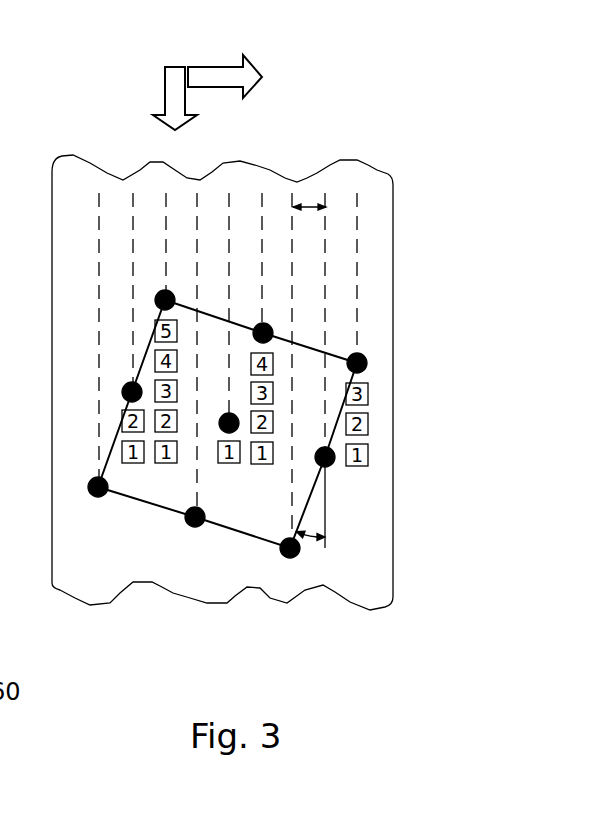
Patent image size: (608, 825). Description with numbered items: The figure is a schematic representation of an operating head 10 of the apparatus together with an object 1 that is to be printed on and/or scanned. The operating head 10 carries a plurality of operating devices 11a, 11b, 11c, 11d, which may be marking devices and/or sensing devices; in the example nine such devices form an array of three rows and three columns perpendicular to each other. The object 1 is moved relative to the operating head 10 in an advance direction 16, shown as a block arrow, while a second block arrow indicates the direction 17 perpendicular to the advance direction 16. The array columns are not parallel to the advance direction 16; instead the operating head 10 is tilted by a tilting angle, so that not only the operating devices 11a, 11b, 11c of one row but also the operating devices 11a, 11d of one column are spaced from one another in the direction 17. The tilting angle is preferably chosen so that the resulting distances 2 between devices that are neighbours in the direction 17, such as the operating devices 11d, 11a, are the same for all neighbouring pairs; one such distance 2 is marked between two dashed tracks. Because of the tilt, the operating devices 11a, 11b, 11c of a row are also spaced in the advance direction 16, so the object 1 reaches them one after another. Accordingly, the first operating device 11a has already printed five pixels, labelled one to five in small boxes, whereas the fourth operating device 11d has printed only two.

The object 1 is at (367, 577).
The distance 2 is at (308, 200).
The operating head 10 is at (382, 380).
The first operating device 11a is at (157, 294).
The operating device 11b is at (264, 324).
The operating device 11c is at (365, 355).
The fourth operating device 11d is at (124, 388).
The advance direction 16 is at (177, 92).
The direction perpendicular to the advance direction 17 is at (223, 73).